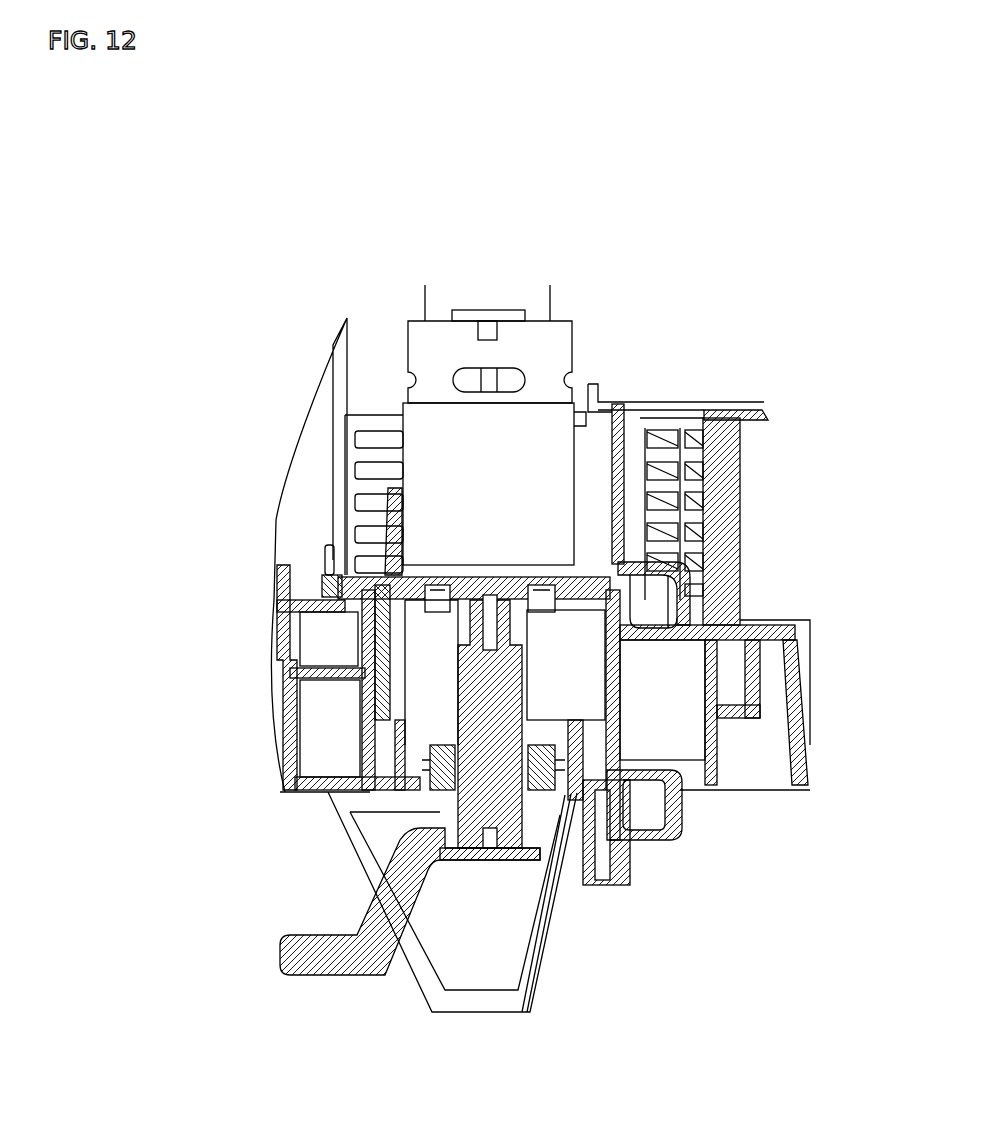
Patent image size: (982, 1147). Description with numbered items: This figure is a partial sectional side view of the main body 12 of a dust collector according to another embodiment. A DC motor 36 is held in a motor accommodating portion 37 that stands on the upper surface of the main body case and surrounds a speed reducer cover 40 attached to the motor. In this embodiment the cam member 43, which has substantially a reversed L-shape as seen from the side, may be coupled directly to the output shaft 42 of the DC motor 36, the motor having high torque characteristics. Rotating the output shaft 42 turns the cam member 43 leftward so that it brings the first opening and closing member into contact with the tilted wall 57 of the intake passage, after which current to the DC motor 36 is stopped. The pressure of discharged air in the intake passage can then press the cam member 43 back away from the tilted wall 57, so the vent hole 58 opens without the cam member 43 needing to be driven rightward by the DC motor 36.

The housing 12 is at (742, 510).
The DC motor 36 is at (553, 344).
The motor accommodating portion 37 is at (330, 578).
The speed reducer cover 40 is at (612, 522).
The output shaft 42 is at (470, 625).
The cam member 43 is at (330, 960).
The tilted wall 57 is at (533, 948).
The vent hole 58 is at (478, 962).